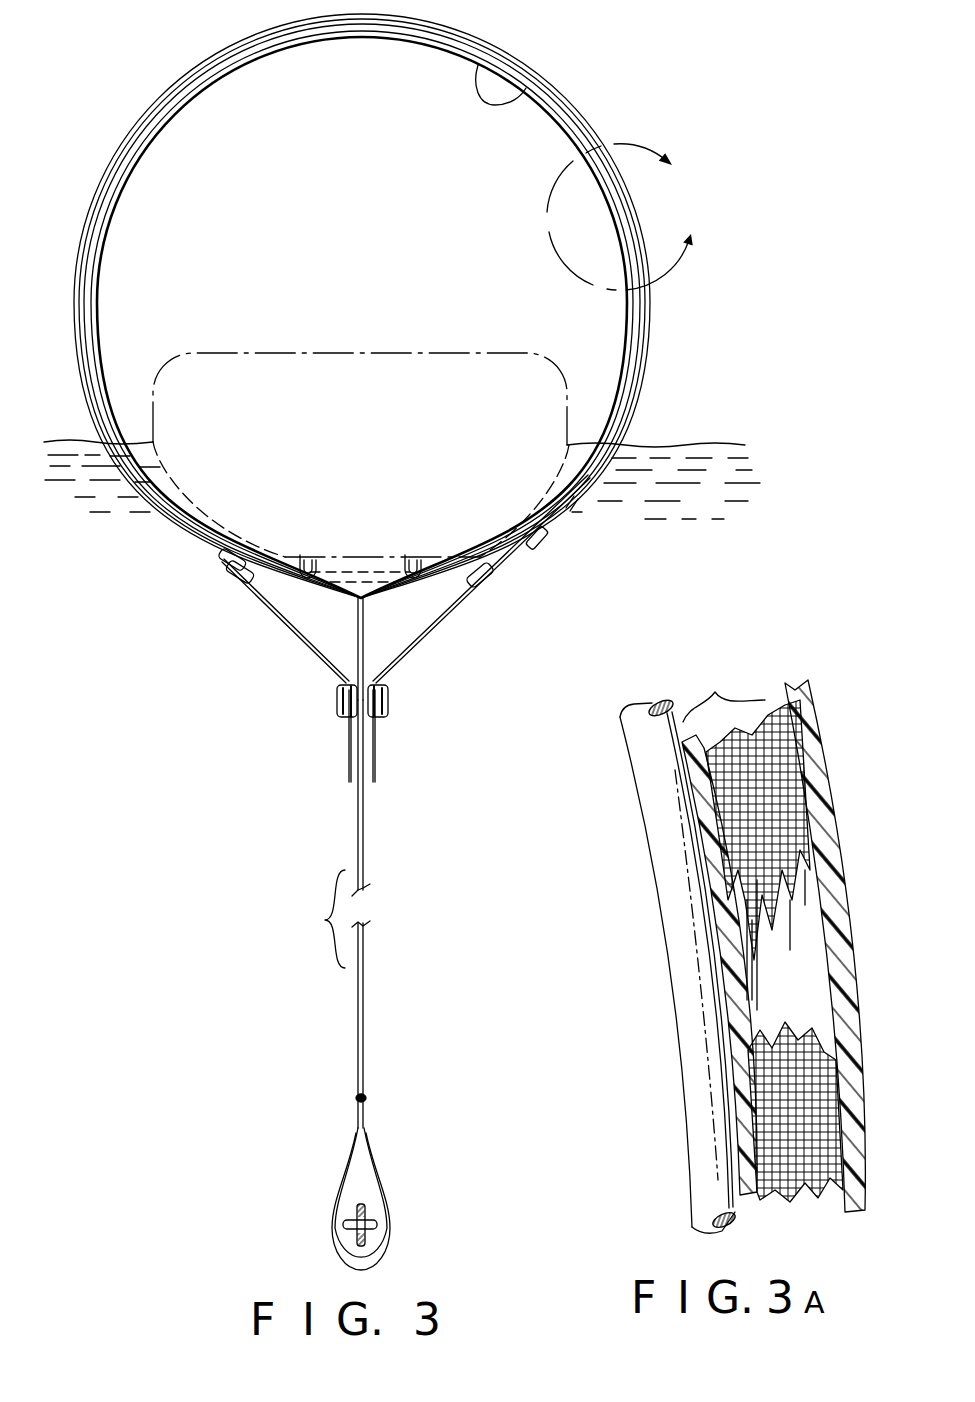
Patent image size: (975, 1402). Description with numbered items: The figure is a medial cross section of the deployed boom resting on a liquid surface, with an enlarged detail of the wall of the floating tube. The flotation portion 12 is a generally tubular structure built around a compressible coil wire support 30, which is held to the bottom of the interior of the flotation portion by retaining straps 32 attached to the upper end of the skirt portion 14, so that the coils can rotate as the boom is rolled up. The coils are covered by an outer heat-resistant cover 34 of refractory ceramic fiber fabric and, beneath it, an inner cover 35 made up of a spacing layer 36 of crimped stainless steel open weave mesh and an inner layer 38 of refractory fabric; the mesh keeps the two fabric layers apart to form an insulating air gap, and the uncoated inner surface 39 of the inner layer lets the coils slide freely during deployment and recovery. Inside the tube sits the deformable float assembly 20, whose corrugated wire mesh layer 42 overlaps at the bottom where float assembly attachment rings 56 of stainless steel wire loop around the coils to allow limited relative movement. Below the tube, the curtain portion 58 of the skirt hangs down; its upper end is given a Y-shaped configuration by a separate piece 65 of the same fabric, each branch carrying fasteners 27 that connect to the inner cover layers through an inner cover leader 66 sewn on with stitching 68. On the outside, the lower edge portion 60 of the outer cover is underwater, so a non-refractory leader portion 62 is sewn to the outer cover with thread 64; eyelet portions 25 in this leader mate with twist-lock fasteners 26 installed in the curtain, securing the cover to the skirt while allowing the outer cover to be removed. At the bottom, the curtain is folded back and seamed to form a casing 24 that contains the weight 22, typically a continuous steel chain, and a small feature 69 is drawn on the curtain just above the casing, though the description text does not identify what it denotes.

In FIG. 3, the flotation portion 12 is at (200, 57).
In FIG. 3, the skirt portion 14 is at (316, 1078).
In FIG. 3, the float assembly 20 is at (357, 421).
In FIG. 3, the weight 22 is at (342, 1222).
In FIG. 3, the casing 24 is at (388, 1228).
In FIG. 3, the eyelet portions 25 is at (338, 700).
In FIG. 3, the twist-lock fasteners 26 is at (390, 700).
In FIG. 3, the fasteners 27 is at (493, 578).
In FIG. 3, the coil wire support 30 is at (113, 231).
In FIG. 3A, the coil wire support 30 is at (663, 867).
In FIG. 3, the retaining straps 32 is at (370, 602).
In FIG. 3, the outer heat-resistant cover 34 is at (650, 333).
In FIG. 3A, the outer heat-resistant cover 34 is at (805, 703).
In FIG. 3A, the inner cover 35 is at (762, 963).
In FIG. 3A, the spacing layer 36 is at (803, 1170).
In FIG. 3A, the inner layer 38 is at (745, 1182).
In FIG. 3, the inner surface 39 is at (519, 96).
In FIG. 3, the corrugated wire mesh layer 42 is at (341, 555).
In FIG. 3, the float assembly attachment rings 56 is at (290, 605).
In FIG. 3, the curtain portion 58 is at (368, 847).
In FIG. 3, the lower edge portion 60 is at (507, 612).
In FIG. 3, the leader portion 62 is at (418, 637).
In FIG. 3, the thread 64 is at (548, 537).
In FIG. 3, the separate piece 65 is at (417, 588).
In FIG. 3, the inner cover leader 66 is at (226, 566).
In FIG. 3, the stitching 68 is at (578, 503).
In FIG. 3, the knot 69 is at (368, 1100).